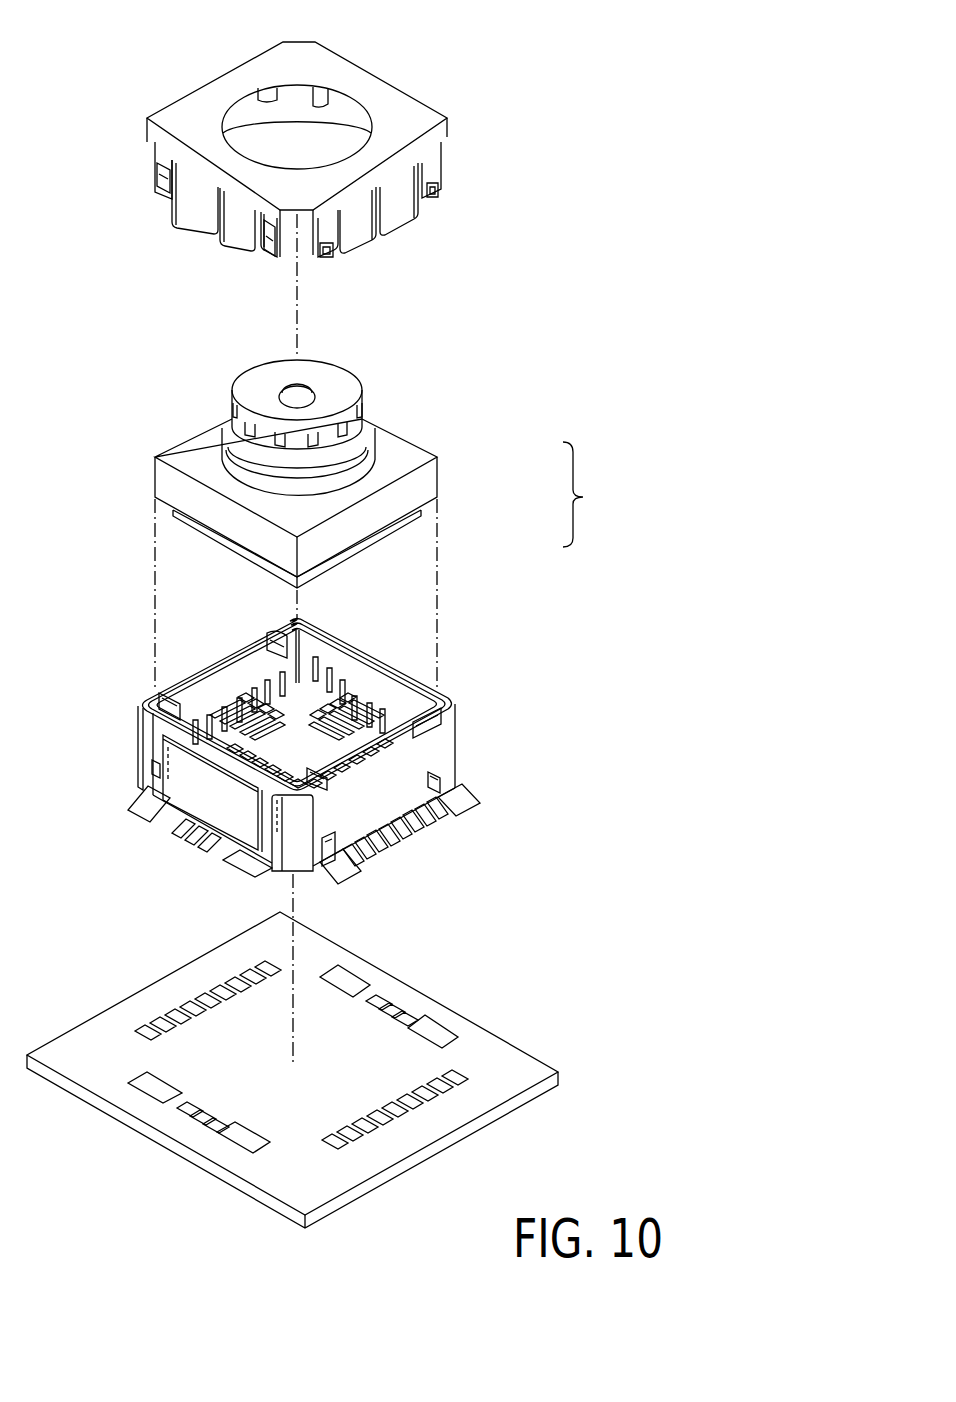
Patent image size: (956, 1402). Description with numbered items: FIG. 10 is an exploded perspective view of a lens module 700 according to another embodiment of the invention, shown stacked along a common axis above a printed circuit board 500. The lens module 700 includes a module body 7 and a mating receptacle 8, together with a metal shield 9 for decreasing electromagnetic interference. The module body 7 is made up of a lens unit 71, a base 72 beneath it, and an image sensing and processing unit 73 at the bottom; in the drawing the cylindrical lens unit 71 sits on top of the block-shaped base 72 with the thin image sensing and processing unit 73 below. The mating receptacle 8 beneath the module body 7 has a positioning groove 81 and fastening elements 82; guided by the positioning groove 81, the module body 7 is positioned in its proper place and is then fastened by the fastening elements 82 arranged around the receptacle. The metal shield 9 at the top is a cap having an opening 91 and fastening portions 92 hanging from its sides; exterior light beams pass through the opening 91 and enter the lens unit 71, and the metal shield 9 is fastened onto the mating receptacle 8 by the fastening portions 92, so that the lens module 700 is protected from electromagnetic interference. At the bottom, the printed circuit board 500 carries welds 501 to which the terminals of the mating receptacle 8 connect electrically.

The metal shield 9 is at (363, 178).
The opening 91 is at (238, 98).
The fastening portions 92 is at (163, 196).
The module body 7 is at (318, 471).
The lens unit 71 is at (252, 372).
The base 72 is at (155, 462).
The image sensing and processing unit 73 is at (217, 537).
The lens module 700 is at (595, 494).
The mating receptacle 8 is at (326, 727).
The positioning groove 81 is at (290, 747).
The fastening elements 82 is at (282, 644).
The printed circuit board 500 is at (292, 1070).
The welds 501 is at (240, 1139).